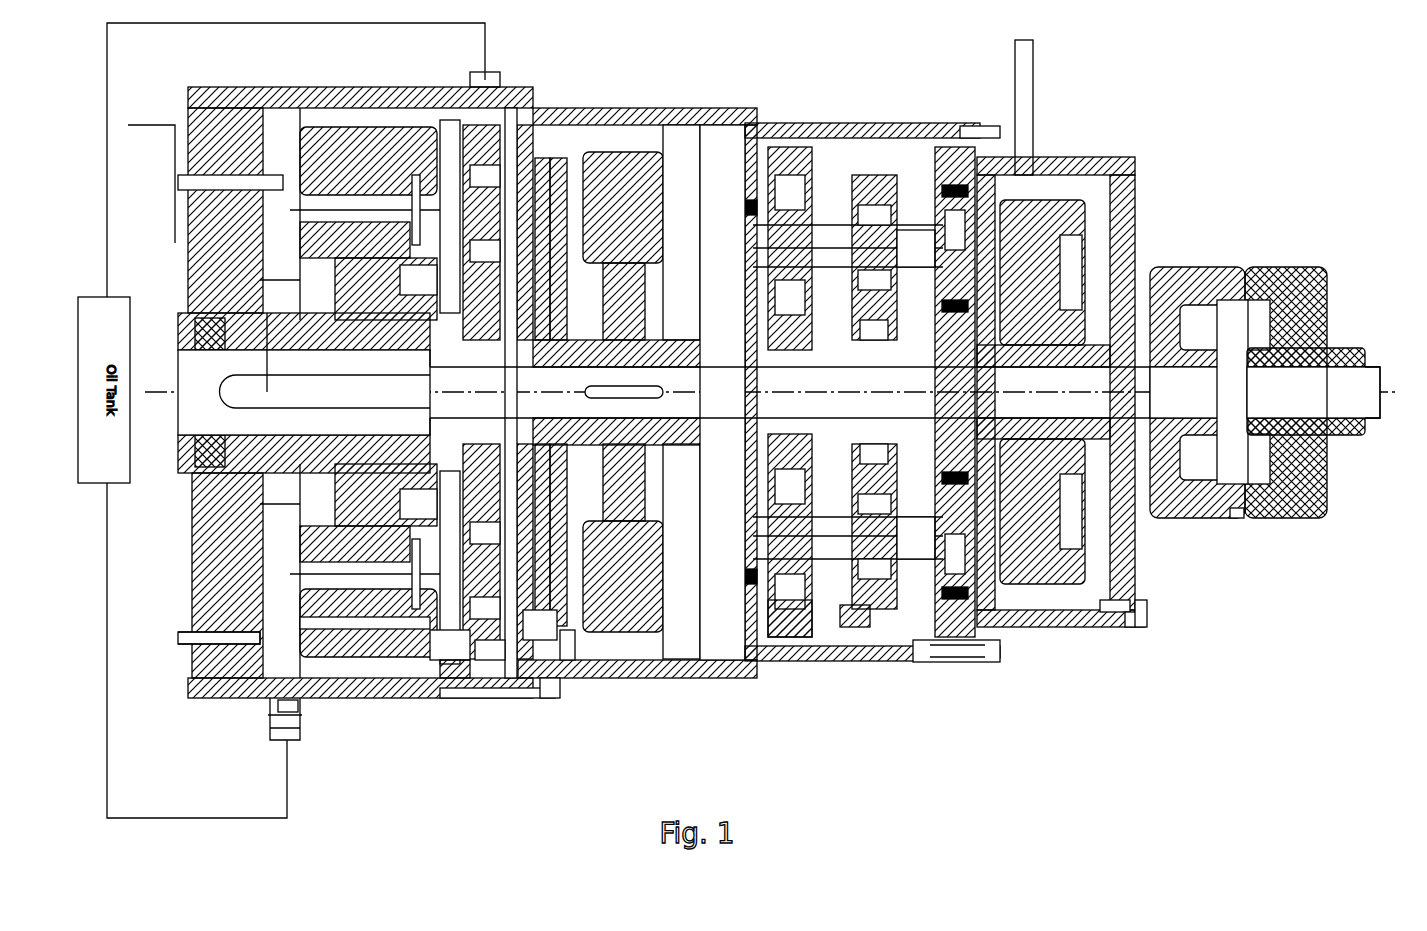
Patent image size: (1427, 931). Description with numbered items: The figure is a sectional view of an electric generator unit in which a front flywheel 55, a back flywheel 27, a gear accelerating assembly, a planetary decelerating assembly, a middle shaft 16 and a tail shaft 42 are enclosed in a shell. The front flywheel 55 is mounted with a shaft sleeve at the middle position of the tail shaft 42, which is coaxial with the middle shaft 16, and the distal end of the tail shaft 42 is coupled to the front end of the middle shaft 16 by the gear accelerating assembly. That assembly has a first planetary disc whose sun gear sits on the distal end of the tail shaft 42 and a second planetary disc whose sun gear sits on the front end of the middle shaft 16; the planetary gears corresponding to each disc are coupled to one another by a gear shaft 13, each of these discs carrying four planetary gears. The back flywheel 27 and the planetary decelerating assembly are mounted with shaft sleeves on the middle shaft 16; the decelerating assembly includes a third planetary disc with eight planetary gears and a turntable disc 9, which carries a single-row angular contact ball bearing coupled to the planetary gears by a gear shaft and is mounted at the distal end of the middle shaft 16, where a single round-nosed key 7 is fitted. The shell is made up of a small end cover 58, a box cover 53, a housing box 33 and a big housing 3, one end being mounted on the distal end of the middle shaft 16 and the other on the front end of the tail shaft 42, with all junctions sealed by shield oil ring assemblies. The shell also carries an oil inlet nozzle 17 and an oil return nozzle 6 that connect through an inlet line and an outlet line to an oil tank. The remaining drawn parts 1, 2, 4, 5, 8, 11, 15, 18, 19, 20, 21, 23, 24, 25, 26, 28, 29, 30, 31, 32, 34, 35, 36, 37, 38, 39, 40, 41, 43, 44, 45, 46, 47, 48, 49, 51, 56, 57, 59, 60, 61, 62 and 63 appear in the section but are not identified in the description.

The oil inlet pipe 1 is at (140, 130).
The housing lower wall 2 is at (195, 700).
The big housing 3 is at (207, 125).
The plug 4 is at (215, 700).
The plug 5 is at (232, 175).
The oil return nozzle 6 is at (270, 705).
The round-nosed key 7 is at (262, 175).
The drain fitting 8 is at (300, 735).
The turntable disc 9 is at (306, 140).
The coil 11 is at (350, 170).
The gear shaft 13 is at (440, 200).
The bearing 15 is at (470, 185).
The middle shaft 16 is at (408, 690).
The oil inlet nozzle 17 is at (520, 140).
The nut 18 is at (445, 680).
The partition plate 19 is at (510, 108).
The spacer 20 is at (468, 680).
The seal 21 is at (542, 158).
The seal 23 is at (558, 158).
The washer 24 is at (482, 662).
The rotor 25 is at (590, 190).
The bolt 26 is at (525, 698).
The back flywheel 27 is at (625, 185).
The fitting 28 is at (540, 698).
The hub 29 is at (648, 330).
The nut 30 is at (550, 698).
The cylinder 31 is at (688, 330).
The pin 32 is at (568, 662).
The housing box 33 is at (730, 108).
The housing bottom wall 34 is at (722, 678).
The gear 35 is at (772, 150).
The gear hub 36 is at (790, 640).
The cover plate 37 is at (816, 123).
The spacer 38 is at (850, 630).
The gear 39 is at (858, 175).
The bolt 40 is at (965, 662).
The bearing 41 is at (875, 320).
The tail shaft 42 is at (1015, 627).
The bearing 43 is at (905, 230).
The bolt 44 is at (1117, 612).
The plate 45 is at (940, 160).
The washer 46 is at (1130, 615).
The bolt 47 is at (975, 126).
The nut 48 is at (1147, 615).
The pin 49 is at (1012, 160).
The housing wall 51 is at (1040, 200).
The box cover 53 is at (1060, 200).
The front flywheel 55 is at (1072, 300).
The pin 56 is at (1237, 518).
The housing top 57 is at (1105, 157).
The small end cover 58 is at (1120, 165).
The coupling hub 59 is at (1160, 283).
The coupling 60 is at (1192, 330).
The coupling flange 61 is at (1263, 275).
The output shaft 62 is at (1317, 348).
The shaft end 63 is at (1377, 353).